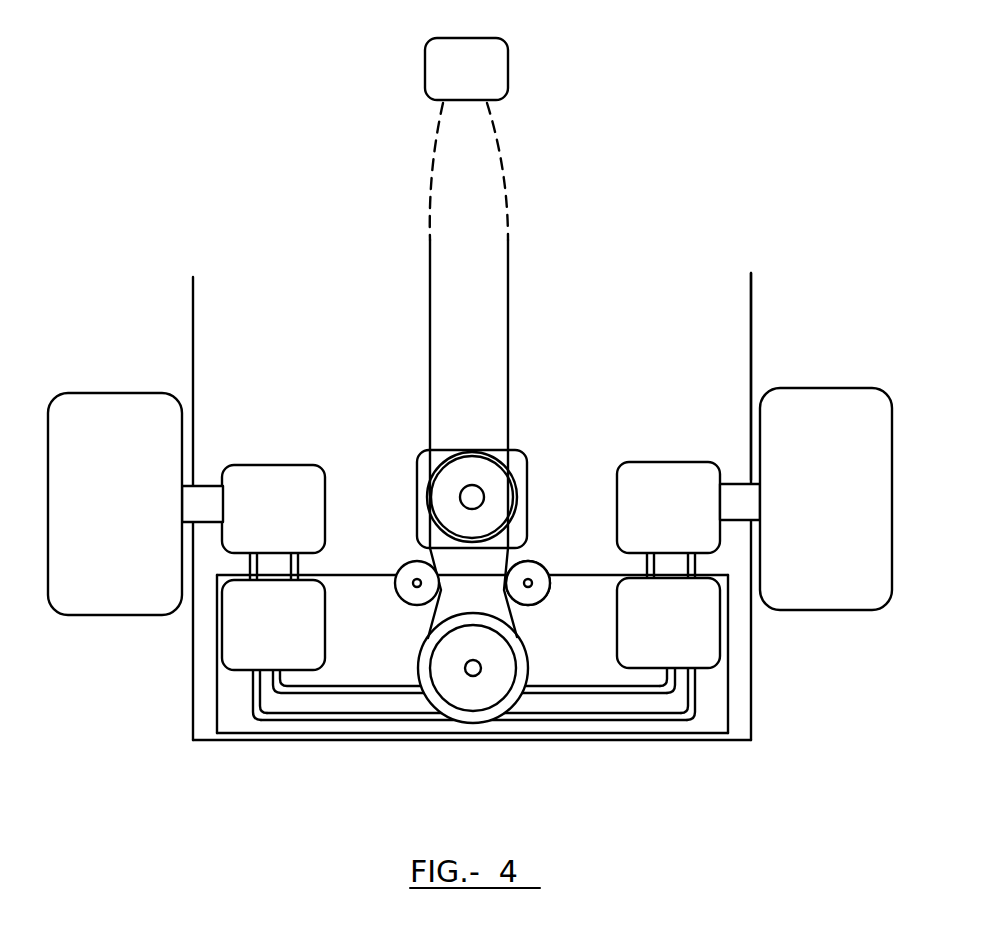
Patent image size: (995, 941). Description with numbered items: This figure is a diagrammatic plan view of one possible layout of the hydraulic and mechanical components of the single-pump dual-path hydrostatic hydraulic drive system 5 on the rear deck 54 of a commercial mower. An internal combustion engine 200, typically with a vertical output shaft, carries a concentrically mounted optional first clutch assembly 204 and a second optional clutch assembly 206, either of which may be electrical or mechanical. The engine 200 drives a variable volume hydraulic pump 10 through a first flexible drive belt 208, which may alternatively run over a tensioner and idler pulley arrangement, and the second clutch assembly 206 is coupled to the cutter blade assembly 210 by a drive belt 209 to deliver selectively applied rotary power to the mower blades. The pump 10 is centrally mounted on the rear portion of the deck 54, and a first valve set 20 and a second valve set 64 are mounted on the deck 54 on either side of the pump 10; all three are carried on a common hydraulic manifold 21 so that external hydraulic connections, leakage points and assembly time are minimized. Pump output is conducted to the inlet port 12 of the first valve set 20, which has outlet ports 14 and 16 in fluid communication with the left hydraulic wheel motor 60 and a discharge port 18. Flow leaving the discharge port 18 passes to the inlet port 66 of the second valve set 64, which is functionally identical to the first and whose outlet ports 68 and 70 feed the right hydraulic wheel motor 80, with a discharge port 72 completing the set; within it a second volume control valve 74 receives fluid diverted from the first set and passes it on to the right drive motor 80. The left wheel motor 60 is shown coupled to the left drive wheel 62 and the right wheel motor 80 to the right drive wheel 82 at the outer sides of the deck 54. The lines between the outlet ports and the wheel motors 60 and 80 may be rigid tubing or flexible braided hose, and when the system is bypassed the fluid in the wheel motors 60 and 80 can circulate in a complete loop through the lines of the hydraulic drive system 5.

The hydraulic drive system 5 is at (754, 707).
The variable volume hydraulic pump 10 is at (506, 702).
The inlet port 12 is at (339, 687).
The outlet port 14 is at (250, 566).
The outlet port 16 is at (300, 562).
The discharge port 18 is at (246, 695).
The first valve set 20 is at (288, 656).
The hydraulic manifold 21 is at (237, 731).
The deck 54 is at (733, 298).
The hydraulic wheel motor 60 is at (287, 503).
The left drive wheel 62 is at (113, 425).
The second valve set 64 is at (690, 654).
The inlet port 66 is at (705, 700).
The outlet port 68 is at (640, 563).
The outlet port 70 is at (736, 639).
The discharge port 72 is at (607, 687).
The second volume control valve 74 is at (621, 703).
The hydraulic wheel motor 80 is at (682, 499).
The right drive wheel 82 is at (820, 412).
The internal combustion engine 200 is at (522, 530).
The first clutch assembly 204 is at (490, 477).
The second clutch assembly 206 is at (528, 583).
The first flexible drive belt 208 is at (516, 626).
The drive belt 209 is at (510, 333).
The cutter blade assembly 210 is at (497, 61).